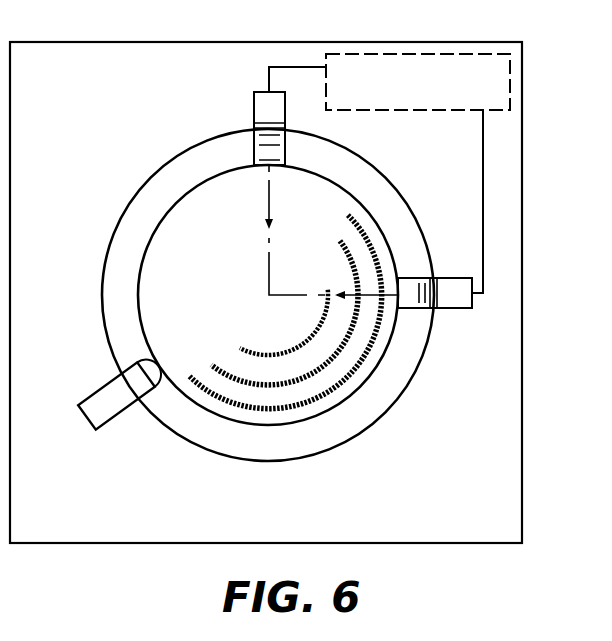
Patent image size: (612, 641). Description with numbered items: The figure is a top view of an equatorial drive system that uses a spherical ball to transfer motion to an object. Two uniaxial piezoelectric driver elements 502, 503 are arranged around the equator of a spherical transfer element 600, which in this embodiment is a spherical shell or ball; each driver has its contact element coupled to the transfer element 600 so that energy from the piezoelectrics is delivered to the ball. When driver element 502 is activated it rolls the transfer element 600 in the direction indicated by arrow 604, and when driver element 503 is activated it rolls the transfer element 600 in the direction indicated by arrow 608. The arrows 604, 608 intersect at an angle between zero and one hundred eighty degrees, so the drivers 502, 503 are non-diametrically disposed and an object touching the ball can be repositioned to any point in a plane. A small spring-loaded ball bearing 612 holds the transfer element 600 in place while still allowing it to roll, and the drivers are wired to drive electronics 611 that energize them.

The uniaxial piezoelectric driver element 502 is at (257, 107).
The uniaxial piezoelectric driver element 503 is at (455, 310).
The spherical transfer element 600 is at (226, 331).
The arrow 604 is at (268, 202).
The arrow 608 is at (363, 292).
The drive electronics 611 is at (510, 82).
The spring-loaded ball bearing 612 is at (136, 354).